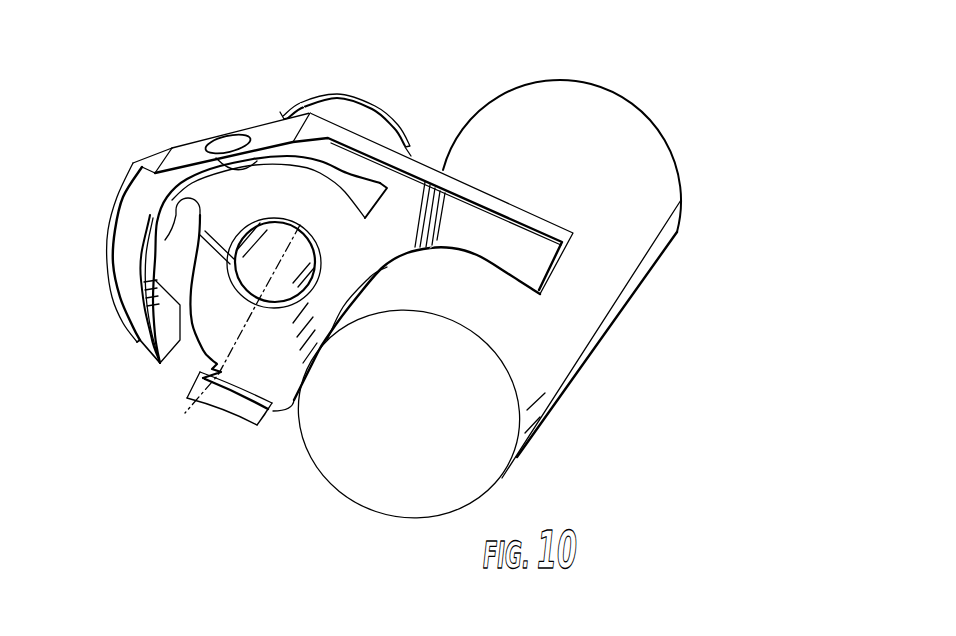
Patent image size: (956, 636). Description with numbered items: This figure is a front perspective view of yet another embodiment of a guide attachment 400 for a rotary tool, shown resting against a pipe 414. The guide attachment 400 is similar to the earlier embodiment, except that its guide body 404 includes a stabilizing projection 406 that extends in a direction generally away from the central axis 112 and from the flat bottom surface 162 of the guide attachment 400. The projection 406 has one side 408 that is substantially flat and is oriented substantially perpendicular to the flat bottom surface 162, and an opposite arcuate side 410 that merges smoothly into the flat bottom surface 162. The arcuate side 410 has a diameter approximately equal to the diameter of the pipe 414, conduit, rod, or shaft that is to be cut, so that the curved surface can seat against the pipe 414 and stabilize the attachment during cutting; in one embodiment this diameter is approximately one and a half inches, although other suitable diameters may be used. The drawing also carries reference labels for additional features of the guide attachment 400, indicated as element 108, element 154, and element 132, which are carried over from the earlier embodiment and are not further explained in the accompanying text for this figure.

The guide attachment 400 is at (228, 68).
The clamp 108 is at (138, 143).
The mounting plate with aperture 154 is at (230, 135).
The central axis 112 is at (240, 275).
The engagement surface 132 is at (176, 307).
The guide body 404 is at (218, 438).
The flat bottom surface 162 is at (306, 394).
The pipe 414 is at (402, 458).
The arcuate side 410 is at (472, 262).
The projection 406 is at (463, 228).
The flat side 408 is at (503, 207).